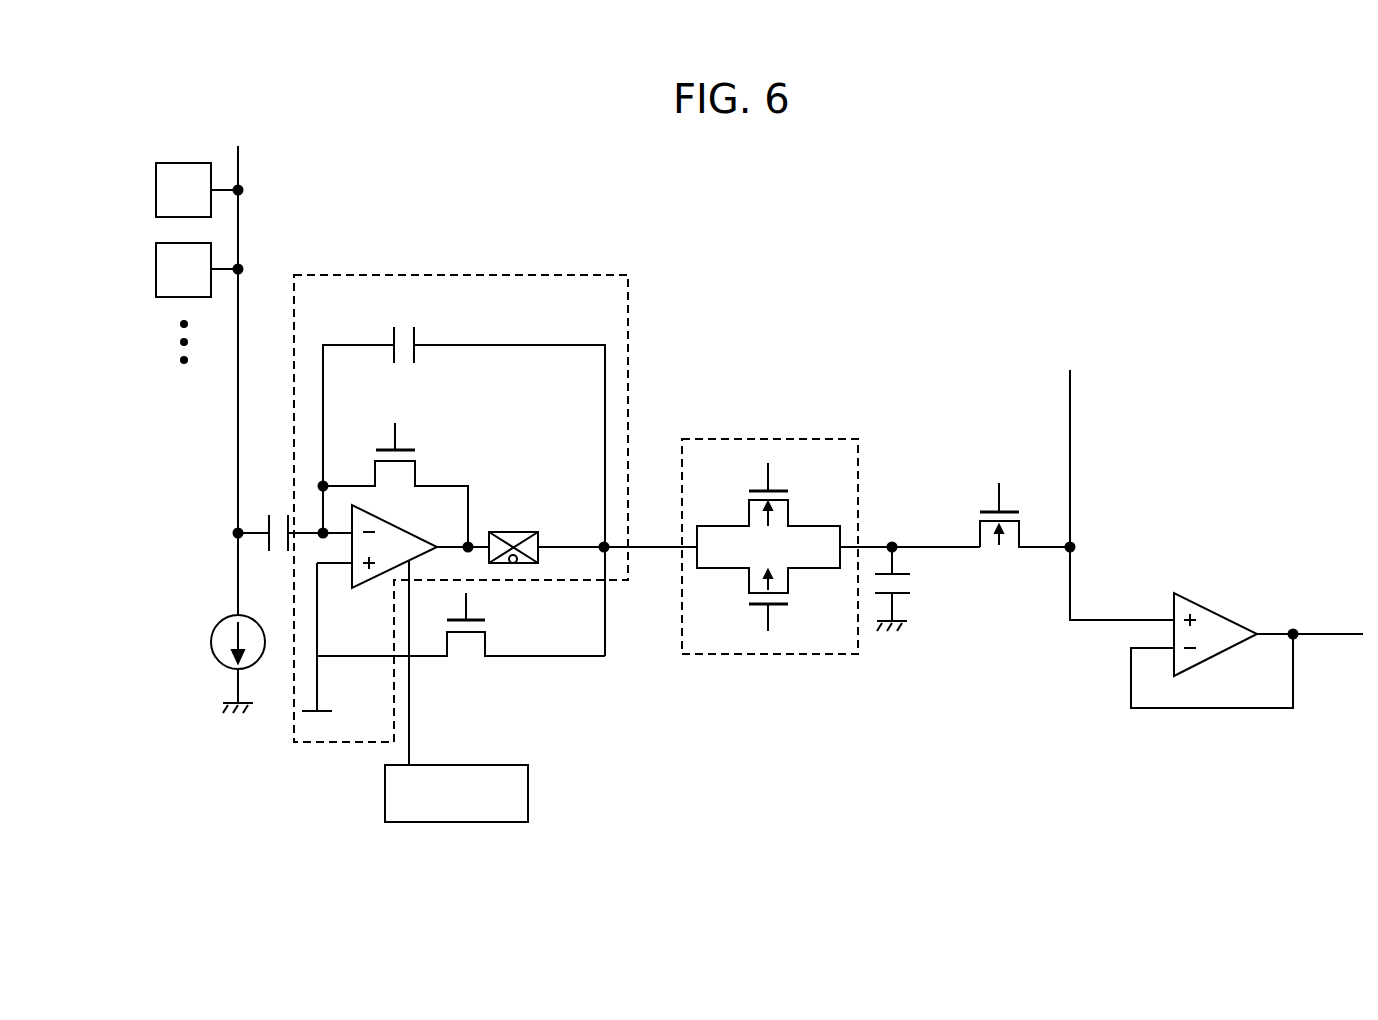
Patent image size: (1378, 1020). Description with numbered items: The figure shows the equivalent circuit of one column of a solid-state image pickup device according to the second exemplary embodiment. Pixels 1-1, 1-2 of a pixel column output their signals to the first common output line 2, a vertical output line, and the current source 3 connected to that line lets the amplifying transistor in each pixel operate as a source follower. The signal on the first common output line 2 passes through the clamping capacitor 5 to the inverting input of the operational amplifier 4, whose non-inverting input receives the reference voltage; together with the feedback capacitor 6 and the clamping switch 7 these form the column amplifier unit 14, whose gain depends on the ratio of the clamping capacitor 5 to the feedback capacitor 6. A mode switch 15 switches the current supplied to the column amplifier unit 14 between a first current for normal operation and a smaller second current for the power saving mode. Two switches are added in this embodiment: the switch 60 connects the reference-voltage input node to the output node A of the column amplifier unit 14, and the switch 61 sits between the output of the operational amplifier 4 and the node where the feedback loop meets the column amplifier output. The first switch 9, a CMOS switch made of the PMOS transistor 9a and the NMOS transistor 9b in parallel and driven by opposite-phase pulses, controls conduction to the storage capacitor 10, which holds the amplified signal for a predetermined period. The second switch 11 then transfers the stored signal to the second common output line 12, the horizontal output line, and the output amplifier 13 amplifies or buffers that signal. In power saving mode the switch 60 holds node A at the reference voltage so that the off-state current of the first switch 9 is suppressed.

The pixel 1-1 is at (156, 190).
The pixel 1-2 is at (156, 268).
The first common output line 2 is at (238, 446).
The current source 3 is at (218, 630).
The operational amplifier 4 is at (399, 522).
The clamping capacitor 5 is at (280, 512).
The feedback capacitor 6 is at (405, 322).
The clamping switch 7 is at (405, 445).
The first switch 9 is at (778, 655).
The PMOS transistor 9a is at (780, 608).
The NMOS transistor 9b is at (780, 488).
The storage capacitor 10 is at (912, 585).
The second switch 11 is at (985, 505).
The second common output line 12 is at (1072, 413).
The output amplifier 13 is at (1220, 610).
The column amplifier unit 14 is at (495, 275).
The mode switch 15 is at (458, 823).
The switch 60 is at (467, 657).
The switch 61 is at (512, 532).